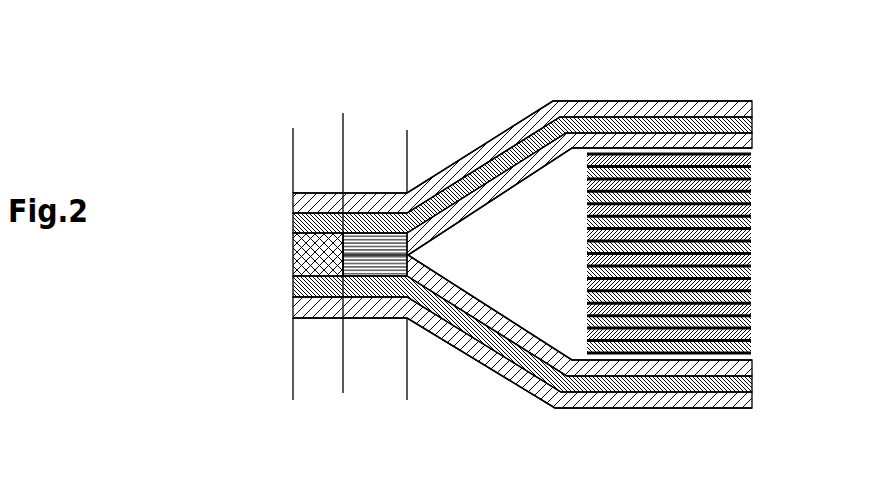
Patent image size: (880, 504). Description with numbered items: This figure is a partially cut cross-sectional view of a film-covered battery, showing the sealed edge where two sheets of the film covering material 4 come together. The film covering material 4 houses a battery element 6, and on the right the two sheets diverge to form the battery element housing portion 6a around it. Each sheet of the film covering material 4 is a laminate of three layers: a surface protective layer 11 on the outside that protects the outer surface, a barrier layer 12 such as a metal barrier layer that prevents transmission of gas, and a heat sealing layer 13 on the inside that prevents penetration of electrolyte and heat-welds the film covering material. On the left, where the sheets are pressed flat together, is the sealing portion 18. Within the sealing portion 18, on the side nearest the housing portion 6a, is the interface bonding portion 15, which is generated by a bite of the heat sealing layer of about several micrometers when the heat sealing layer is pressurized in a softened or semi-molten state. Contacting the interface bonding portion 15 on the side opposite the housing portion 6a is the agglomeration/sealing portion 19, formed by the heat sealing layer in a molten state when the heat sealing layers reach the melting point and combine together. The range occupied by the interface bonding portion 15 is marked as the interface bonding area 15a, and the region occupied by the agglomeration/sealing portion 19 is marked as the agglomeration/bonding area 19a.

The film covering material 4 is at (760, 105).
The battery element 6 is at (774, 226).
The battery element housing portion 6a is at (556, 183).
The surface protective layer 11 is at (300, 202).
The barrier layer 12 is at (300, 222).
The heat sealing layer 13 is at (488, 197).
The interface bonding portion 15 is at (385, 240).
The interface bonding area 15a is at (407, 130).
The sealing portion 18 is at (407, 398).
The agglomeration/sealing portion 19 is at (300, 256).
The agglomeration/bonding area 19a is at (343, 130).